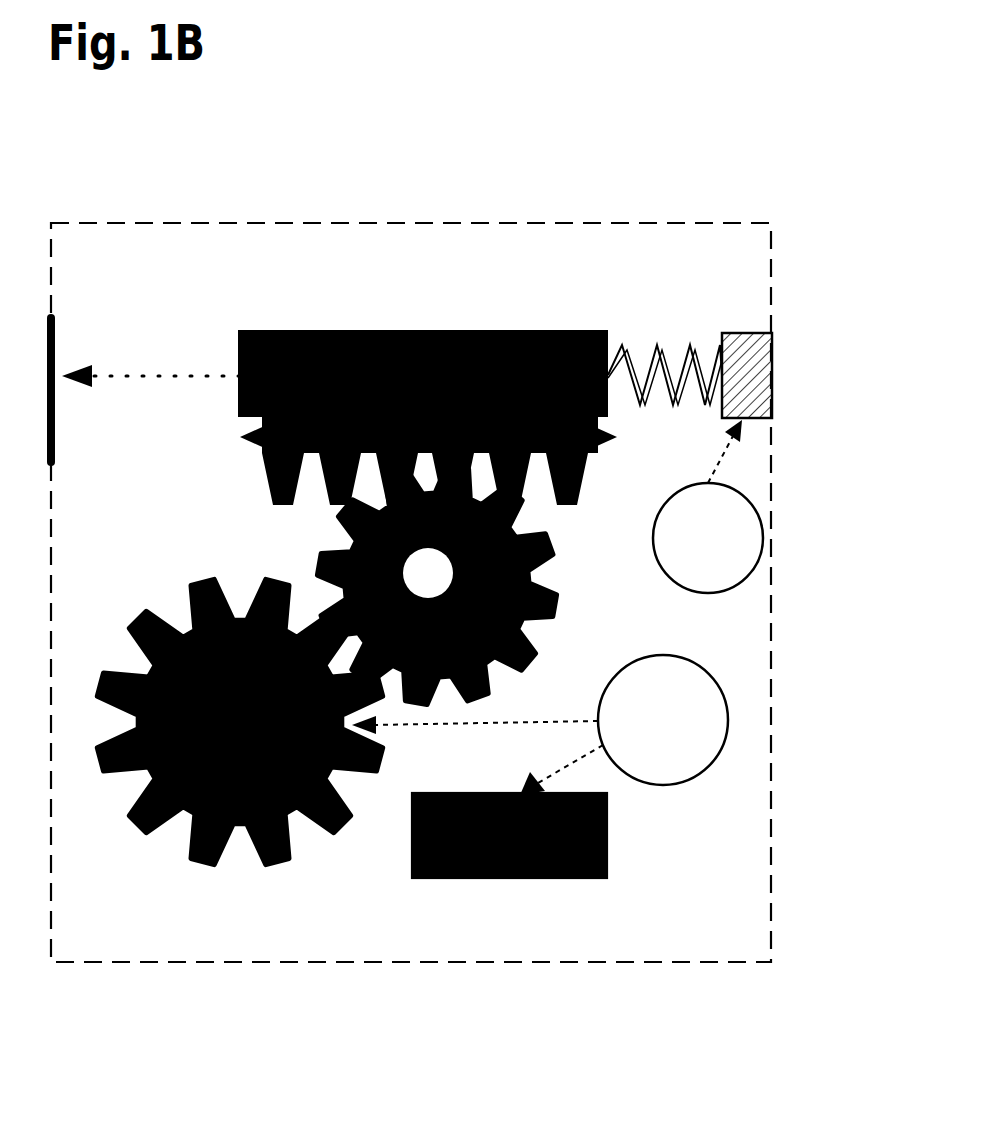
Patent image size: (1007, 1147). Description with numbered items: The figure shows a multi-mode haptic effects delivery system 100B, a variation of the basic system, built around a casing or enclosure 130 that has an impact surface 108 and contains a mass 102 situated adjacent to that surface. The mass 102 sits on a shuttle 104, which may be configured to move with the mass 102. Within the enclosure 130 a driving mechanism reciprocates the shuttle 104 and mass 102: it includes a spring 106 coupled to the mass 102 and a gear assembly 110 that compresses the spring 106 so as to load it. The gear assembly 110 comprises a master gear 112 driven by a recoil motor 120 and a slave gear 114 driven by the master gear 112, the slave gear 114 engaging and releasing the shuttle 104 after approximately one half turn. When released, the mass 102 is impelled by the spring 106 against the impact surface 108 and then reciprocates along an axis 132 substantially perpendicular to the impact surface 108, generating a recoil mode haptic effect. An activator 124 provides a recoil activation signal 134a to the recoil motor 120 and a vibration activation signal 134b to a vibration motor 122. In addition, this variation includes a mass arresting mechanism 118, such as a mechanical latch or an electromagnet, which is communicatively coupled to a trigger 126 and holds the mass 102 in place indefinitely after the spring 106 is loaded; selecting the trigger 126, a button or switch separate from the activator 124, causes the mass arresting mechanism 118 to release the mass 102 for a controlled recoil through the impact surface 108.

The multi-mode haptic effects delivery system 100B is at (808, 195).
The mass 102 is at (423, 373).
The shuttle 104 is at (266, 479).
The spring 106 is at (668, 410).
The impact surface 108 is at (54, 430).
The gear assembly 110 is at (240, 555).
The master gear 112 is at (230, 862).
The slave gear 114 is at (538, 570).
The mass arresting mechanism 118 is at (742, 332).
The recoil motor 120 is at (239, 721).
The vibration motor 122 is at (509, 835).
The activator 124 is at (668, 786).
The trigger 126 is at (705, 594).
The enclosure 130 is at (345, 225).
The axis 132 is at (612, 440).
The recoil activation signal 134a is at (426, 728).
The vibration activation signal 134b is at (578, 768).